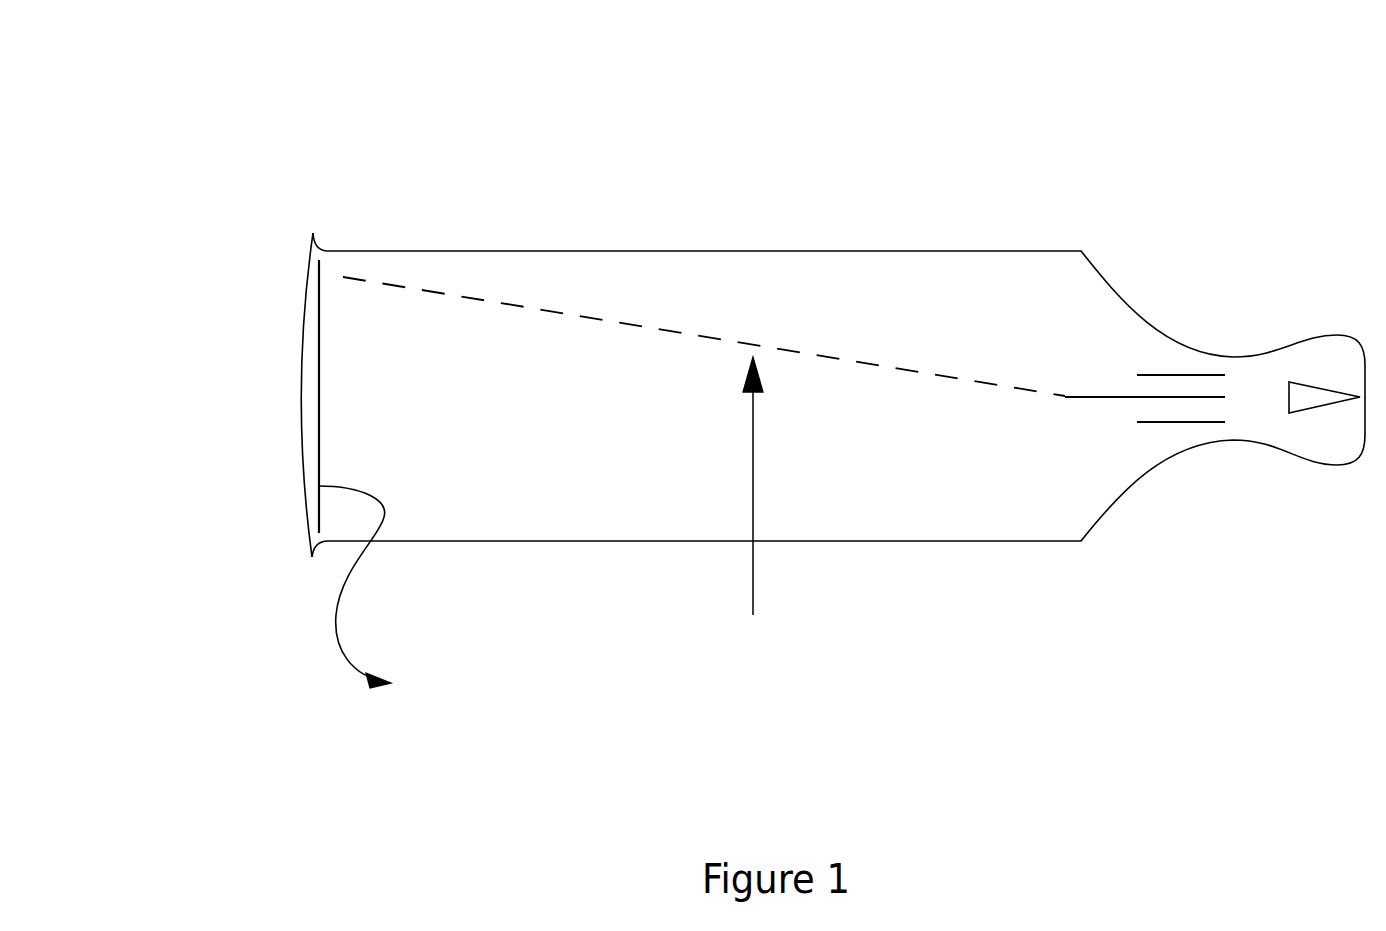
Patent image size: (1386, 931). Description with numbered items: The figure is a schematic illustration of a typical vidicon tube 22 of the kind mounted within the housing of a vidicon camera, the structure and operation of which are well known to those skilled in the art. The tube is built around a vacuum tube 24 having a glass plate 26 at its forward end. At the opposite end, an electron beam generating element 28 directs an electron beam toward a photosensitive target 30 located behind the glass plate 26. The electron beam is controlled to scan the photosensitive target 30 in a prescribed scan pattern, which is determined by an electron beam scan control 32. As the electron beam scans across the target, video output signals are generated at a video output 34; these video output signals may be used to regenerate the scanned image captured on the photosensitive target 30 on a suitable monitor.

The vidicon tube 22 is at (912, 148).
The vacuum tube 24 is at (591, 250).
The glass plate 26 is at (302, 330).
The electron beam generating element 28 is at (1163, 397).
The photosensitive target 30 is at (319, 386).
The electron beam scan control 32 is at (1313, 382).
The video output 34 is at (391, 643).